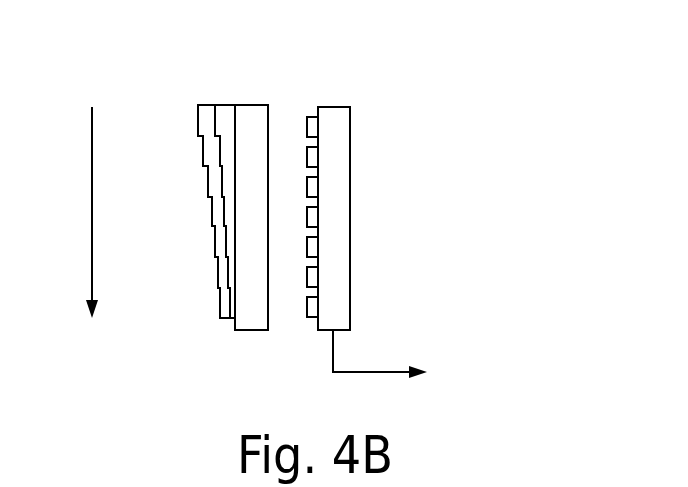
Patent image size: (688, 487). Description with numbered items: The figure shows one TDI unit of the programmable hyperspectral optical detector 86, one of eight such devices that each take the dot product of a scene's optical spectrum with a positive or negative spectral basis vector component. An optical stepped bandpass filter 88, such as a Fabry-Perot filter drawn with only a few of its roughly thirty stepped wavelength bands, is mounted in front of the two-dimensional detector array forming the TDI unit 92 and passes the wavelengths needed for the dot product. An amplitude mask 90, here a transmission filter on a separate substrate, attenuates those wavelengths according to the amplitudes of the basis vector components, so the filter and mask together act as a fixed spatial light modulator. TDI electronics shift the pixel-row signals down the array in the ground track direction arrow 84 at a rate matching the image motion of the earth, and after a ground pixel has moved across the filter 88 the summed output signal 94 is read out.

The ground track direction arrow 84 is at (71, 212).
The programmable hyperspectral optical detector 86 is at (436, 153).
The optical stepped bandpass filter 88 is at (217, 80).
The amplitude mask 90 is at (253, 105).
The TDI unit 92 is at (308, 118).
The summed output signal 94 is at (409, 361).